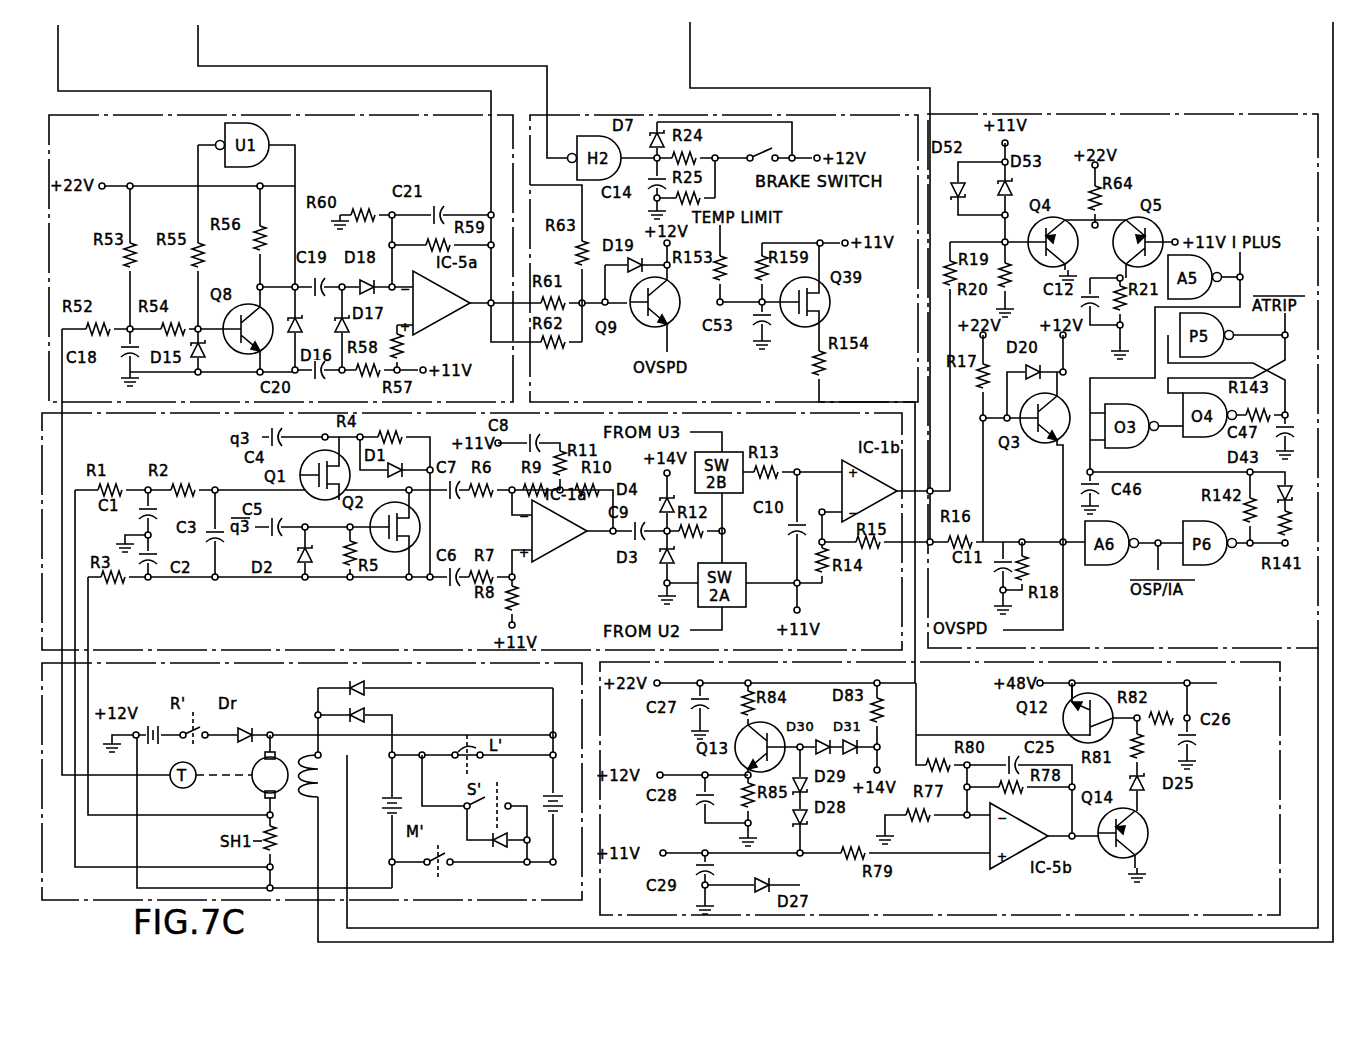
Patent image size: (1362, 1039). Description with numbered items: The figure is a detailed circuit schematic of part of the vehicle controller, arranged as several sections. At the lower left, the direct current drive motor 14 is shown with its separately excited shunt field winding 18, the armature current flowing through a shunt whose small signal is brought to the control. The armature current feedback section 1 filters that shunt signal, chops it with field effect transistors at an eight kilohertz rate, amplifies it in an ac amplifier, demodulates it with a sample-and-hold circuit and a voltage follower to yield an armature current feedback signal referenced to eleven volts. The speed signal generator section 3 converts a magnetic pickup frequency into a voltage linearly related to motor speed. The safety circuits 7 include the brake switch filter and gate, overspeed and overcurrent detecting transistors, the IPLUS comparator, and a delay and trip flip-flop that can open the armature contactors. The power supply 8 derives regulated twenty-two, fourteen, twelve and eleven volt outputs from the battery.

The direct current drive motor 14 is at (262, 792).
The shunt field winding 18 is at (305, 785).
The armature current feedback circuit 1 is at (435, 636).
The speed signal generator 3 is at (480, 155).
The safety circuits 7 is at (1297, 137).
The power supply 8 is at (1203, 909).